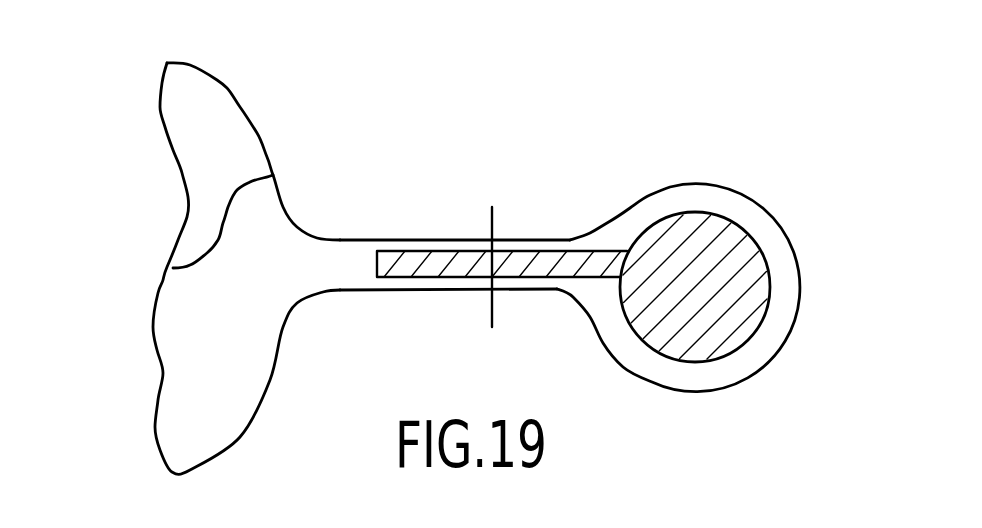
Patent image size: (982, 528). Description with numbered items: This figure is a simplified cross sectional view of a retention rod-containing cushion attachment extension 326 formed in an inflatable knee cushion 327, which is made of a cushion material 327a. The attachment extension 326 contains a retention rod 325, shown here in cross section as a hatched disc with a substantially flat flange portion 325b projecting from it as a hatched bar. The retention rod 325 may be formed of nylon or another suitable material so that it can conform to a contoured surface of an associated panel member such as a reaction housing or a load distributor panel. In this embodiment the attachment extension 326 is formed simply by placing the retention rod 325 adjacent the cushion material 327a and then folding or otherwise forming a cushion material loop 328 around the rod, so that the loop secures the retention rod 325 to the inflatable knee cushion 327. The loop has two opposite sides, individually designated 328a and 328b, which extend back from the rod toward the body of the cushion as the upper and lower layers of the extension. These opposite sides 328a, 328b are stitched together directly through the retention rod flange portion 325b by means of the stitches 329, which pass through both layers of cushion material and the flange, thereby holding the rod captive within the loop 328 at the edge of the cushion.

The retention rod 325 is at (705, 332).
The flange portion 325b is at (527, 280).
The cushion attachment extension 326 is at (562, 109).
The inflatable knee cushion 327 is at (227, 88).
The cushion material 327a is at (173, 268).
The cushion material loop 328 is at (733, 190).
The first side of cushion material loop 328a is at (398, 292).
The second side of cushion material loop 328b is at (358, 238).
The stitches 329 is at (492, 227).